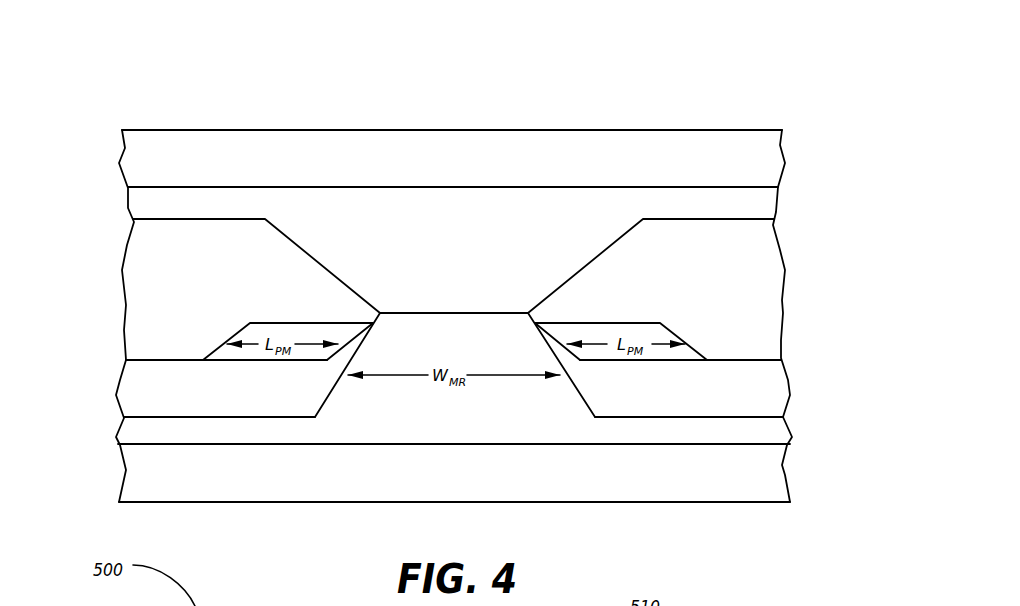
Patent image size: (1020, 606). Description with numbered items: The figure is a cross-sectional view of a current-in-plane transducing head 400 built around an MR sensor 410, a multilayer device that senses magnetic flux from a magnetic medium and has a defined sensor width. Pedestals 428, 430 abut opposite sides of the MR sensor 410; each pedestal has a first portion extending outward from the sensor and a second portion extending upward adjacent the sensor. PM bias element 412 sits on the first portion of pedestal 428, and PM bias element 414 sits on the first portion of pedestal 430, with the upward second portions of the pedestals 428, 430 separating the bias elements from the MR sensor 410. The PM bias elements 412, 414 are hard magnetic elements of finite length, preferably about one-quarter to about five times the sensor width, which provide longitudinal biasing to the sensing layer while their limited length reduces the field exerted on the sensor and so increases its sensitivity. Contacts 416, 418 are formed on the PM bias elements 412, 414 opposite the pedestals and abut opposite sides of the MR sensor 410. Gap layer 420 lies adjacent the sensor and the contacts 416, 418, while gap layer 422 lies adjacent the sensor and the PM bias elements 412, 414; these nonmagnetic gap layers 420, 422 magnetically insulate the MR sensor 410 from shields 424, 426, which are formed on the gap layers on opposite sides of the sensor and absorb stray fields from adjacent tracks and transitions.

The CIP transducing head 400 is at (670, 72).
The MR sensor 410 is at (418, 313).
The PM bias element 412 is at (247, 326).
The PM bias element 414 is at (638, 335).
The contact 416 is at (173, 265).
The contact 418 is at (752, 270).
The gap layer 420 is at (752, 205).
The gap layer 422 is at (752, 432).
The shield 424 is at (752, 160).
The shield 426 is at (752, 485).
The pedestal 428 is at (178, 388).
The pedestal 430 is at (752, 395).